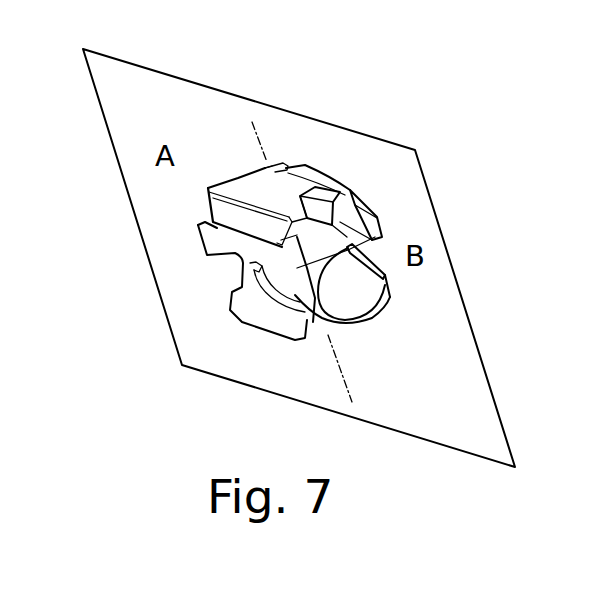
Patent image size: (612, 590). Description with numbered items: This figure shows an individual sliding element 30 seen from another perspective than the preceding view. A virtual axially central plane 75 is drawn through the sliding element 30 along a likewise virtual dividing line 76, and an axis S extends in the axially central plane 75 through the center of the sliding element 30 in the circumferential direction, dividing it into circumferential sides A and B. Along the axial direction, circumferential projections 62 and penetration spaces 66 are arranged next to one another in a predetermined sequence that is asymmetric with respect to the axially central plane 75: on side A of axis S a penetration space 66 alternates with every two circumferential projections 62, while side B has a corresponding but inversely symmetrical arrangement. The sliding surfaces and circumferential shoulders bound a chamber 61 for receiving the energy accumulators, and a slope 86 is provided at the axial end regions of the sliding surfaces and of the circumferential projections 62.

The sliding element 30 is at (318, 180).
The chamber 61 is at (295, 287).
The circumferential projection 62 is at (345, 188).
The penetration space 66 is at (357, 203).
The axially central plane 75 is at (269, 118).
The dividing line 76 is at (375, 237).
The slope 86 is at (248, 227).
The axis S is at (238, 178).